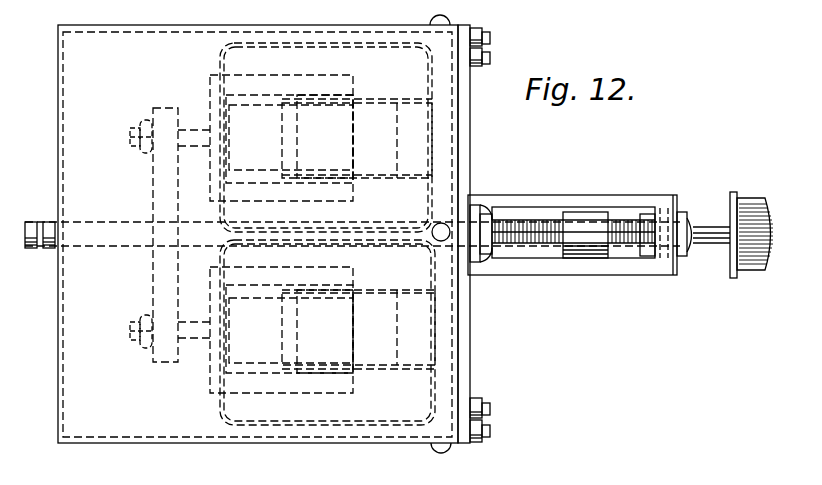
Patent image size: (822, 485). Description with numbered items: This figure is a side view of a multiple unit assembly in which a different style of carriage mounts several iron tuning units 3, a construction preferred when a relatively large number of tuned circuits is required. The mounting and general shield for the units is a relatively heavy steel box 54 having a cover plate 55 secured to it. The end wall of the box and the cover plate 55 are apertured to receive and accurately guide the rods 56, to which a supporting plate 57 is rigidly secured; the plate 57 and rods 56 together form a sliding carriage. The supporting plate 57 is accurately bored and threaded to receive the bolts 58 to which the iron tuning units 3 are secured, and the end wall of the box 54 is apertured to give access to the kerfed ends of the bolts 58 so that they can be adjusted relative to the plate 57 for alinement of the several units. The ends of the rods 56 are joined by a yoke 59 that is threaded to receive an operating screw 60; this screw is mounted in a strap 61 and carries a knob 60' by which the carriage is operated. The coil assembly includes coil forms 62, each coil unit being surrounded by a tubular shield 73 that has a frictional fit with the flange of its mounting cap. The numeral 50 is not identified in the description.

The iron tuning unit 3 is at (210, 93).
The adjusting knob 50 is at (50, 222).
The steel box 54 is at (170, 437).
The cover plate 55 is at (470, 325).
The rods 56 is at (538, 248).
The supporting plate 57 is at (153, 292).
The bolts 58 is at (132, 150).
The yoke 59 is at (585, 256).
The operating screw 60 is at (654, 214).
The knob 60' is at (733, 252).
The strap 61 is at (644, 268).
The coil form 62 is at (410, 175).
The tubular shield 73 is at (220, 62).